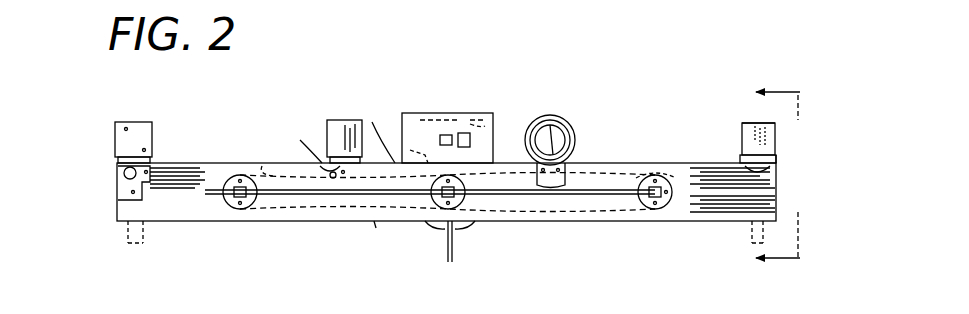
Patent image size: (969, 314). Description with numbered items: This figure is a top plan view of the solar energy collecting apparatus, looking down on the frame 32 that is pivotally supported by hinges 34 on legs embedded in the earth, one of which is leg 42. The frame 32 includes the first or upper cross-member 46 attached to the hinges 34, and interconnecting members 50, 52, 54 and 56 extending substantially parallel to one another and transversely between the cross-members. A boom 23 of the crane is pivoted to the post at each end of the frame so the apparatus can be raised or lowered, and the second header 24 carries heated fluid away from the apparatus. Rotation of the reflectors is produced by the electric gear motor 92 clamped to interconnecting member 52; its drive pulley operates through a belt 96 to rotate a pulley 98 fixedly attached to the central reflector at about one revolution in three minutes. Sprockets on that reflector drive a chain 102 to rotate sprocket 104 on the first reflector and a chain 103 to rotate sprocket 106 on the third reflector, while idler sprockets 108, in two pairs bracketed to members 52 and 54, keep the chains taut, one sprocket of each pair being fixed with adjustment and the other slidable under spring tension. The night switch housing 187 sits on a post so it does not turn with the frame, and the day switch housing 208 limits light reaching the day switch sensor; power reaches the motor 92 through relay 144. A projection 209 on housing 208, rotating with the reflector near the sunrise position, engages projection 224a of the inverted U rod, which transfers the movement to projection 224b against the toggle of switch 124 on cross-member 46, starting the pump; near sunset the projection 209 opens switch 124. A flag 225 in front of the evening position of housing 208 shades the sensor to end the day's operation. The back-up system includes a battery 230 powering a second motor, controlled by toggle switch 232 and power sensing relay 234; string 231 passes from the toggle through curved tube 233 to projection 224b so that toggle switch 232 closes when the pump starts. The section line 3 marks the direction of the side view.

The section line 3- 3 is at (788, 163).
The boom 23 is at (110, 240).
The second header 24 is at (206, 199).
The frame 32 is at (112, 192).
The hinge 34 is at (163, 160).
The leg 42 is at (752, 122).
The first cross-member 46 is at (718, 163).
The interconnecting member 50 is at (125, 170).
The interconnecting member 52 is at (332, 165).
The interconnecting member 54 is at (562, 125).
The interconnecting member 56 is at (778, 157).
The electric gear motor 92 is at (322, 160).
The belt 96 is at (344, 131).
The pulley 98 is at (470, 223).
The chain 102 is at (262, 165).
The chain 103 is at (665, 165).
The sprocket 104 is at (230, 228).
The sprocket 106 is at (678, 165).
The idler sprocket 108 is at (305, 224).
The switch 124 is at (398, 163).
The relay 144 is at (490, 135).
The night switch housing 187 is at (576, 132).
The day switch housing 208 is at (446, 233).
The projection 209 is at (456, 251).
The projection 224a is at (495, 140).
The projection 224b is at (418, 150).
The flag 225 is at (372, 231).
The battery 230 is at (134, 122).
The string 231 is at (460, 130).
The toggle switch 232 is at (480, 128).
The curved tube 233 is at (420, 118).
The power sensing relay 234 is at (490, 128).